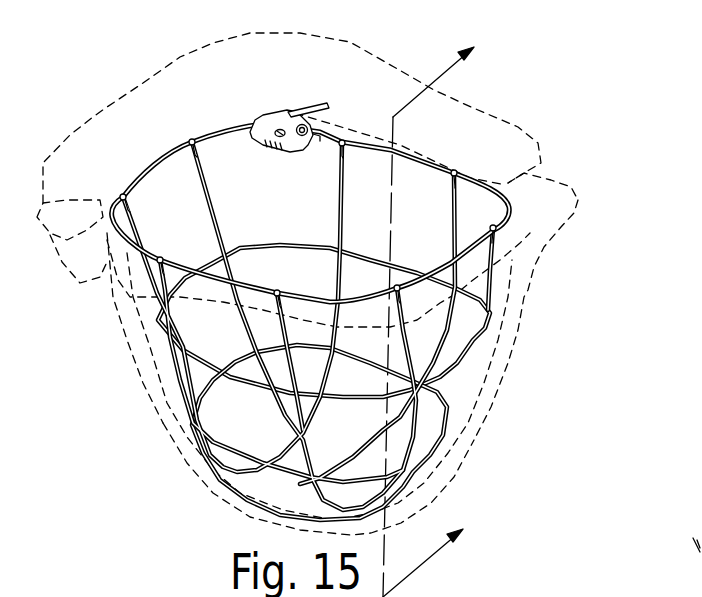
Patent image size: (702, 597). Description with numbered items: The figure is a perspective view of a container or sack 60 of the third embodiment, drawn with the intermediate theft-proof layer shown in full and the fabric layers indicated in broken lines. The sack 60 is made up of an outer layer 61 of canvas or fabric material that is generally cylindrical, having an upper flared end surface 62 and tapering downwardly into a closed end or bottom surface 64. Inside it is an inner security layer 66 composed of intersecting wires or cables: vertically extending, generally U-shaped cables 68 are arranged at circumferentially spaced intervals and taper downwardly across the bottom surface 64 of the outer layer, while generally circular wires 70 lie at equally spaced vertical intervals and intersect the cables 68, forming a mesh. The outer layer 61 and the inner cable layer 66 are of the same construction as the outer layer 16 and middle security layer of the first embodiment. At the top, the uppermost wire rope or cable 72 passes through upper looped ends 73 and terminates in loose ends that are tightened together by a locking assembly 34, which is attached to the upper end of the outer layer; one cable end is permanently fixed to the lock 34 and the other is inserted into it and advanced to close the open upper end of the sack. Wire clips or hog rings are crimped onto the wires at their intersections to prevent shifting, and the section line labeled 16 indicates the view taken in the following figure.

The outer layer 16 is at (443, 315).
The locking assembly 34 is at (293, 113).
The container or sack 60 is at (524, 302).
The outer layer 61 is at (152, 411).
The upper flared end surface 62 is at (555, 186).
The closed end or bottom surface 64 is at (220, 504).
The inner security layer 66 is at (203, 187).
The U-shaped cables 68 is at (414, 357).
The circular wires 70 is at (429, 457).
The uppermost wire rope or cable 72 is at (431, 163).
The upper looped ends 73 is at (190, 142).